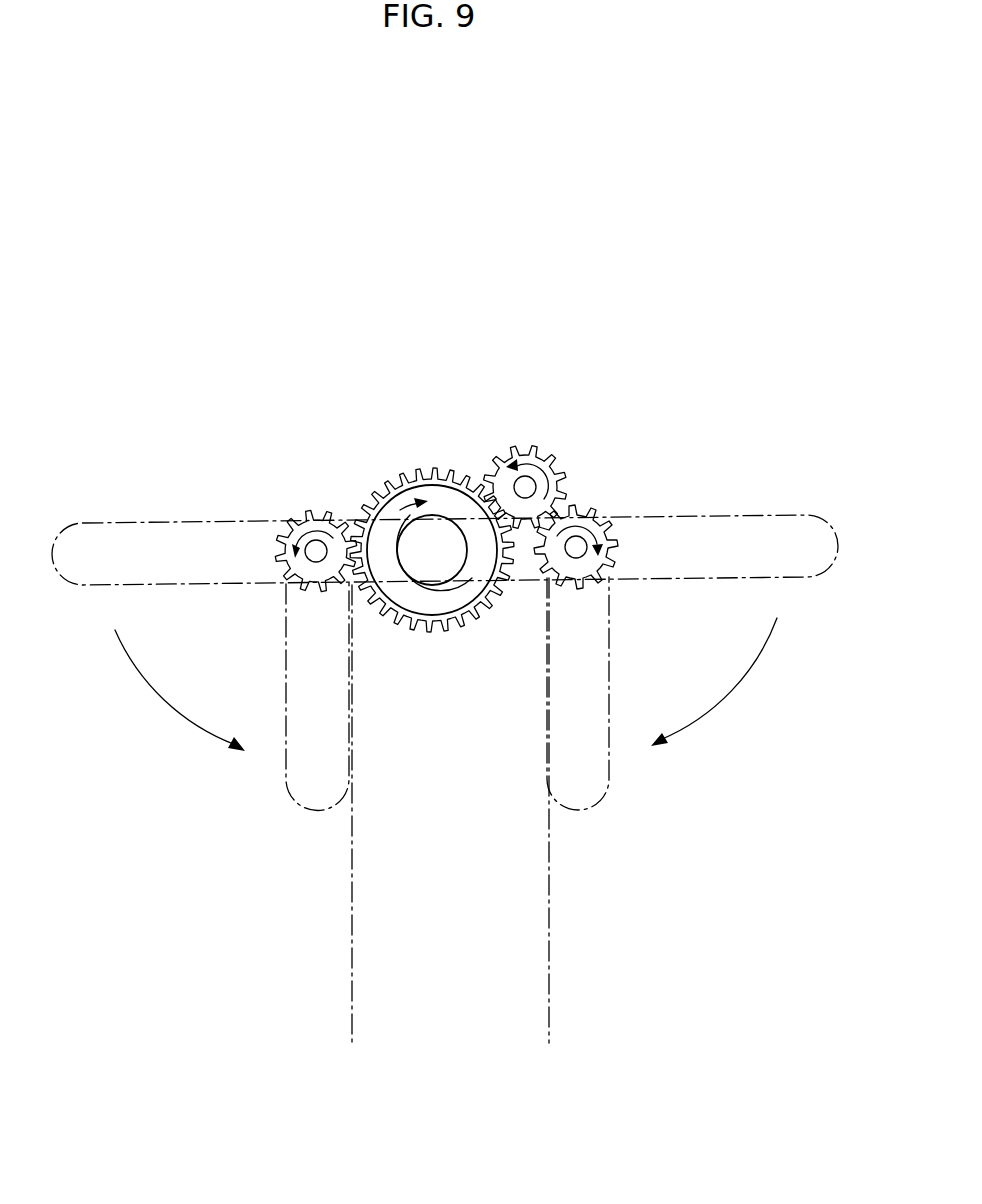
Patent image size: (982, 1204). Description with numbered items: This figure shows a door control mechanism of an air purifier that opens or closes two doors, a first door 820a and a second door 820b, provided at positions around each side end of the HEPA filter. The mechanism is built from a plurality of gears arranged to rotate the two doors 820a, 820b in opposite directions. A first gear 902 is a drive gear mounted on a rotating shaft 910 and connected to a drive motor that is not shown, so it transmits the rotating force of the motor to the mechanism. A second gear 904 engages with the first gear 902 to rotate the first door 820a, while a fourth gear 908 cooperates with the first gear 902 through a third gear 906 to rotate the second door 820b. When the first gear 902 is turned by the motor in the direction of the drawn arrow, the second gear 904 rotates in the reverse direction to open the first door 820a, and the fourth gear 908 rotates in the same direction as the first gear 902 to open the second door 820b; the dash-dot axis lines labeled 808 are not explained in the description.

The first gear 902 is at (425, 492).
The second gear 904 is at (312, 515).
The third gear 906 is at (552, 462).
The fourth gear 908 is at (600, 517).
The rotating shaft 910 is at (460, 570).
The first door 820a is at (105, 542).
The second door 820b is at (783, 528).
The shaft axis 808 is at (535, 997).